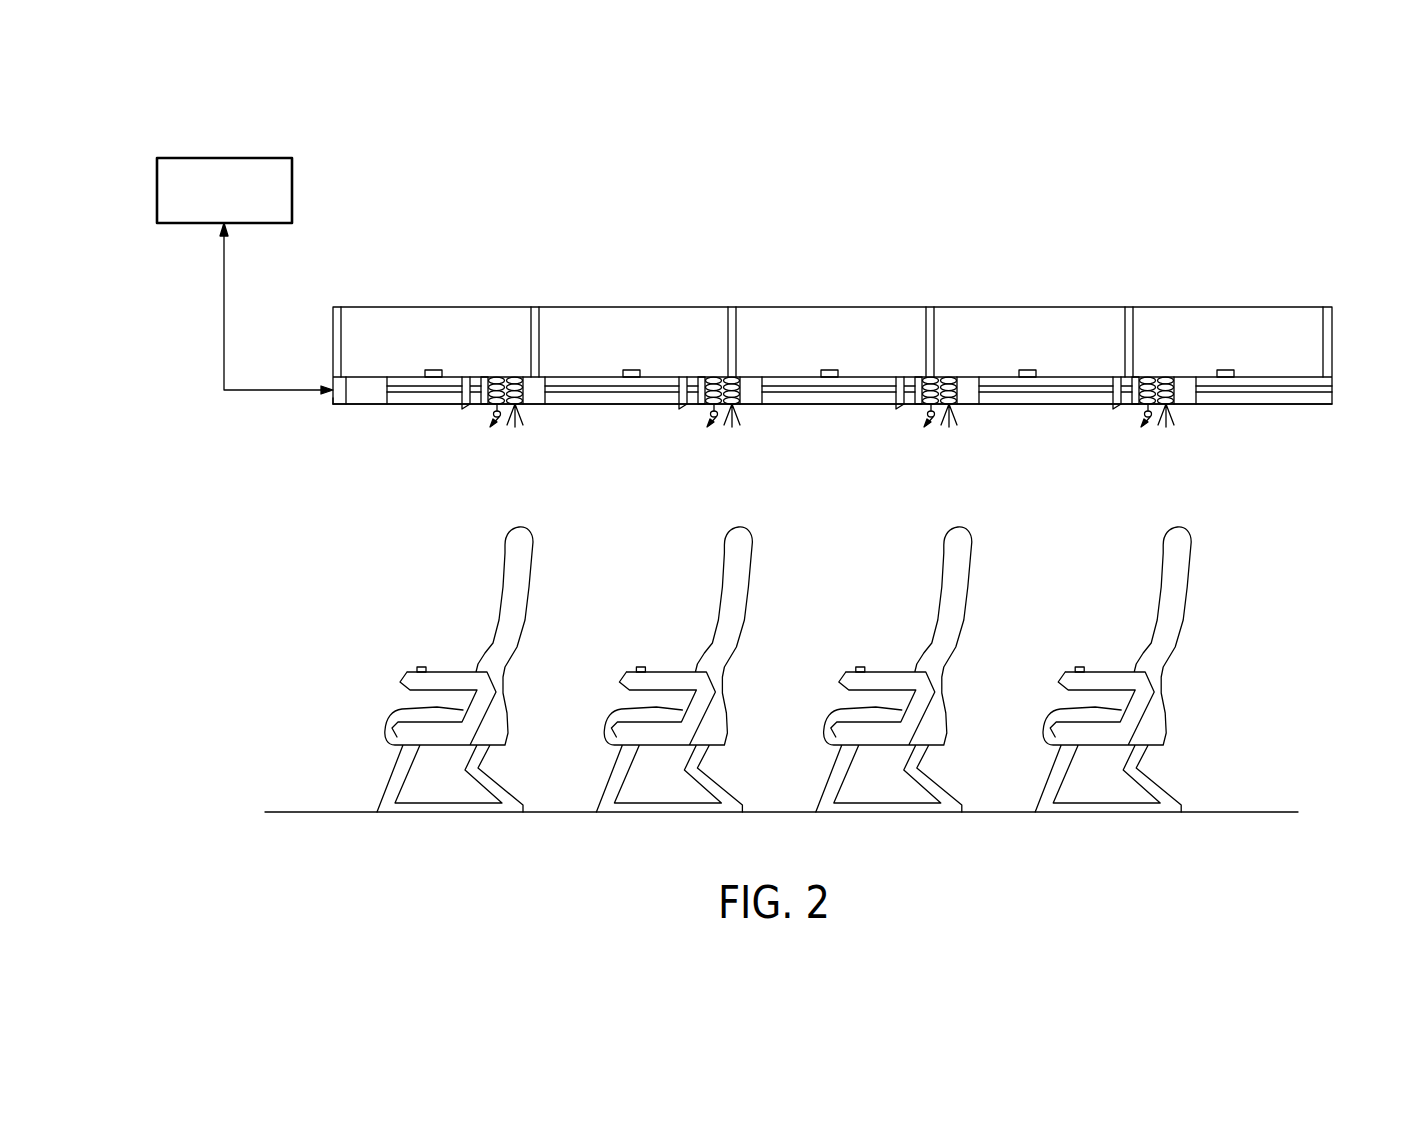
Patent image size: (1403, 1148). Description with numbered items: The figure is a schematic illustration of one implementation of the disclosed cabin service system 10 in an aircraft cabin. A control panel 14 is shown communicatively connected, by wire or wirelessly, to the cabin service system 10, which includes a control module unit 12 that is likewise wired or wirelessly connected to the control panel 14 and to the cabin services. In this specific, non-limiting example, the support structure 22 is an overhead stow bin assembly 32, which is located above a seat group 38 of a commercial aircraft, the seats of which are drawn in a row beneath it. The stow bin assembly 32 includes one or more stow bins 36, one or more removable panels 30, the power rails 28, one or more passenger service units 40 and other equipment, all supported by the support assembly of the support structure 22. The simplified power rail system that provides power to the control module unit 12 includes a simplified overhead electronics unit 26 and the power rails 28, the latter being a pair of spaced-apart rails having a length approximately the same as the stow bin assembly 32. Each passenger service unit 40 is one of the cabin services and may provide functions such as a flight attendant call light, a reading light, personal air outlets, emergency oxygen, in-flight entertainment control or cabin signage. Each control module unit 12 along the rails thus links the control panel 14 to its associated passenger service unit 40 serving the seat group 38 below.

The cabin service system 10 is at (892, 193).
The control module unit 12 is at (367, 398).
The control panel 14 is at (219, 158).
The support structure 22 is at (1292, 293).
The simplified overhead electronics unit 26 is at (341, 398).
The power rail 28 is at (437, 390).
The removable panel 30 is at (403, 406).
The overhead stow bin assembly 32 is at (342, 470).
The stow bin 36 is at (436, 307).
The seat group 38 is at (421, 667).
The passenger service unit 40 is at (482, 400).